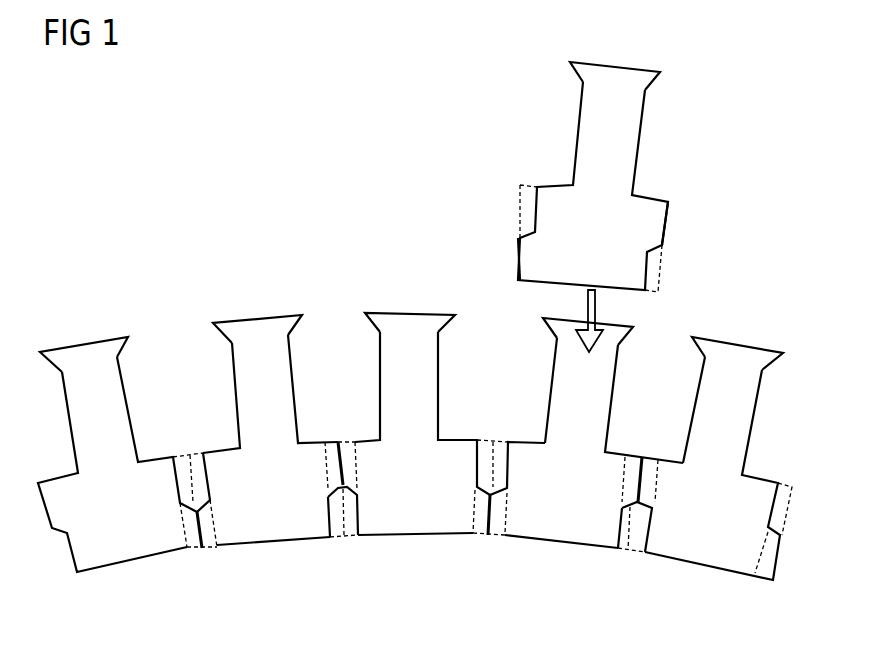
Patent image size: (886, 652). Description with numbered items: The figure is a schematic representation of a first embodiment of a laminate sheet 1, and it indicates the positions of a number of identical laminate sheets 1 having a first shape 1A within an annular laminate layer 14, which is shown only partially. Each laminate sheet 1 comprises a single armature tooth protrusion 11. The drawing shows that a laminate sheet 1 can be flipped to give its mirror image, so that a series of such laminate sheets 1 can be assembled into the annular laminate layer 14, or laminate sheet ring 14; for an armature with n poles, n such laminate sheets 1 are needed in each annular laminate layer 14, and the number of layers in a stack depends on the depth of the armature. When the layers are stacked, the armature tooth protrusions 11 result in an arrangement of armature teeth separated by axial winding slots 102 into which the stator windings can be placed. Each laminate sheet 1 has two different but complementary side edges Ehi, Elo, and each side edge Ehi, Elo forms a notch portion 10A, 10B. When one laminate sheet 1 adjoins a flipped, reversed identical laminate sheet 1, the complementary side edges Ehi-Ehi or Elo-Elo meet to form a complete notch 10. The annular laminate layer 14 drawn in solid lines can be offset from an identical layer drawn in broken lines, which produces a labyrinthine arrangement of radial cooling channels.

The laminate sheet 1 is at (628, 142).
The first shape 1A is at (605, 251).
The armature tooth protrusion 11 is at (618, 76).
The complete notch 10 is at (202, 482).
The notch portion 10A is at (520, 210).
The notch portion 10B is at (658, 275).
The axial winding slot 102 is at (182, 342).
The annular laminate layer 14 is at (780, 414).
The side edge Ehi is at (518, 257).
The side edge Elo is at (670, 223).